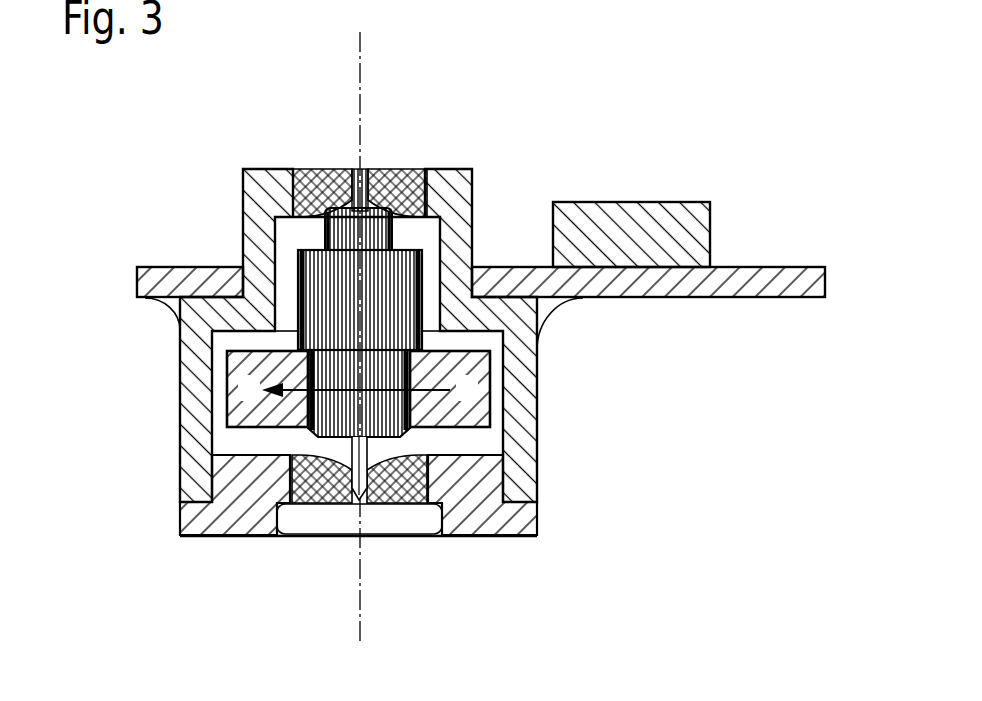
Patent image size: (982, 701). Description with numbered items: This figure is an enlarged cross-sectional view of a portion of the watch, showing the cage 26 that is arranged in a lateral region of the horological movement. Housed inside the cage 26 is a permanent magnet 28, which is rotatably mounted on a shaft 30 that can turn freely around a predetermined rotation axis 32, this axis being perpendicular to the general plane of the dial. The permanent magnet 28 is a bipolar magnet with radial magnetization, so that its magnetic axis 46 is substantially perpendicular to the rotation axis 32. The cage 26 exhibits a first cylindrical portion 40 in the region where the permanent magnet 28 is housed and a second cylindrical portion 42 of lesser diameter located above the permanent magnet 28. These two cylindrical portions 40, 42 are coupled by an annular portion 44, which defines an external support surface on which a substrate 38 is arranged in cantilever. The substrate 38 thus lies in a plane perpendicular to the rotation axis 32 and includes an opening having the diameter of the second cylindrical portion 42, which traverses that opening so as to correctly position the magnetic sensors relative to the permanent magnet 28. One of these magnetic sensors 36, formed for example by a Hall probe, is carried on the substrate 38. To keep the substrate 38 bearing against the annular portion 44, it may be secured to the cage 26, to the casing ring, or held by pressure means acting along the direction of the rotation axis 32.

The cage 26 is at (203, 453).
The permanent magnet 28 is at (443, 415).
The shaft 30 is at (355, 303).
The rotation axis 32 is at (363, 66).
The magnetic sensor 36 is at (633, 247).
The substrate 38 is at (757, 287).
The first cylindrical portion 40 is at (612, 392).
The second cylindrical portion 42 is at (502, 210).
The annular portion 44 is at (227, 313).
The magnetic axis 46 is at (287, 402).